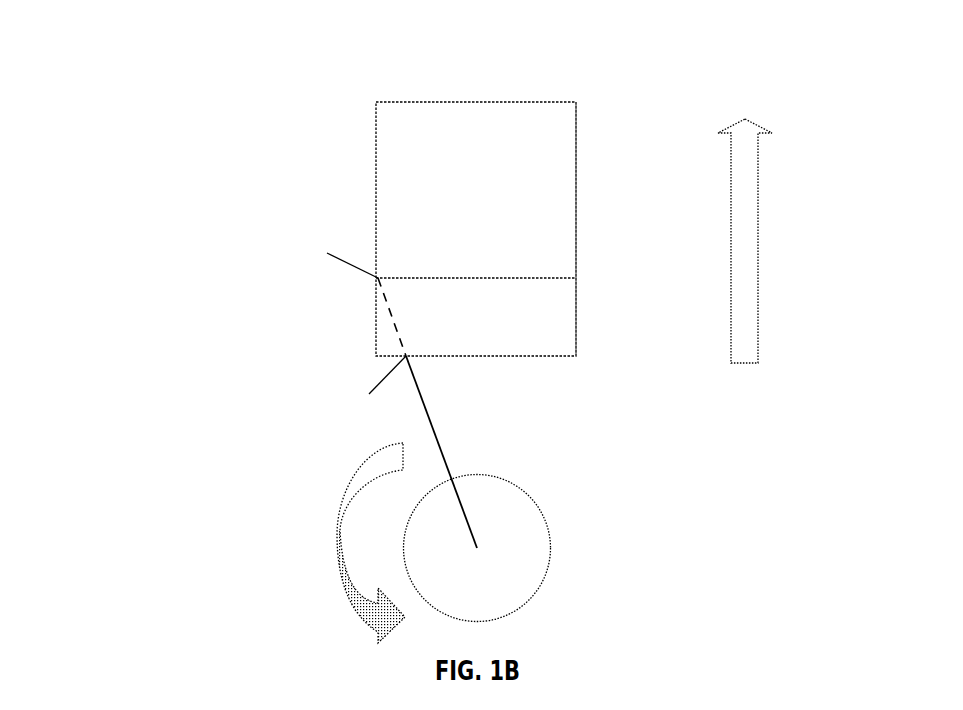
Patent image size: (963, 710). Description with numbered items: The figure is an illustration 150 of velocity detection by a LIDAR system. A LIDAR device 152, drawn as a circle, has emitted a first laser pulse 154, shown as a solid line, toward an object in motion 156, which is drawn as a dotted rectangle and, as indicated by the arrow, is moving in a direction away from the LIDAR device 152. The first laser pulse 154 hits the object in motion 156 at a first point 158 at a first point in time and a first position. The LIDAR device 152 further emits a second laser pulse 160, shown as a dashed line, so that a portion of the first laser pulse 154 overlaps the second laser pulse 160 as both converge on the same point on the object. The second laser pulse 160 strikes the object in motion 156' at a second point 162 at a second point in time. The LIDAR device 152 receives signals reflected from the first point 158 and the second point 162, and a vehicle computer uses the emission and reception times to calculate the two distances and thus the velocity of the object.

The illustration 150 is at (108, 63).
The LIDAR device 152 is at (550, 549).
The first laser pulse 154 is at (425, 401).
The object in motion 156 is at (511, 317).
The object in motion at second position 156' is at (518, 229).
The first point 158 is at (374, 388).
The second laser pulse 160 is at (390, 310).
The second point 162 is at (330, 255).